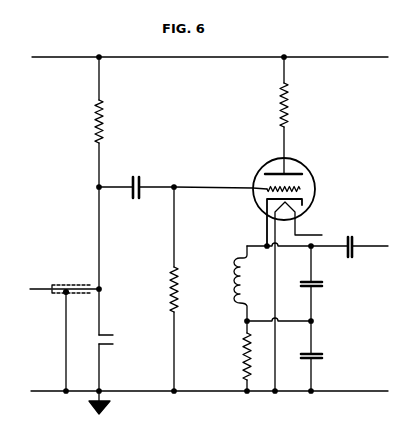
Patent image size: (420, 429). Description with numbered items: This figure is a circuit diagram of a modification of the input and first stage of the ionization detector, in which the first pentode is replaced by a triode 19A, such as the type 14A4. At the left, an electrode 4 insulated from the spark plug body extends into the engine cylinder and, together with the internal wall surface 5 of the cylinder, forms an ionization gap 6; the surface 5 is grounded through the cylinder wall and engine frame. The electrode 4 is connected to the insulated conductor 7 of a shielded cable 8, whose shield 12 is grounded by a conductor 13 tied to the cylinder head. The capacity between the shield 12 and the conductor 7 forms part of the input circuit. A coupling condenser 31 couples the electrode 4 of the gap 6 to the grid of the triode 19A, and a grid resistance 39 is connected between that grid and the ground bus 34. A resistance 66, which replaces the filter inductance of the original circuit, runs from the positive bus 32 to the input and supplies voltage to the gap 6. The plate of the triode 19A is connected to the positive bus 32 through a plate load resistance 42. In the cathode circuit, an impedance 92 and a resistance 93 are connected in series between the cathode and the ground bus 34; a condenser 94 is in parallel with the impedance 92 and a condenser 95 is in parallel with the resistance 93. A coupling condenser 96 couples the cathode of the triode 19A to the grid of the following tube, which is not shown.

The electrode 4 is at (108, 335).
The internal wall surface 5 is at (108, 345).
The ionization gap 6 is at (114, 339).
The insulated conductor 7 is at (40, 288).
The shielded cable 8 is at (66, 266).
The shield 12 is at (58, 293).
The conductor 13 is at (63, 341).
The triode 19A is at (316, 190).
The coupling condenser 31 is at (137, 176).
The positive bus 32 is at (228, 57).
The ground bus 34 is at (204, 396).
The grid resistance 39 is at (170, 287).
The plate load resistance 42 is at (290, 108).
The resistance 66 is at (108, 121).
The impedance 92 is at (234, 281).
The resistance 93 is at (243, 357).
The condenser 94 is at (323, 285).
The condenser 95 is at (323, 355).
The coupling condenser 96 is at (350, 237).